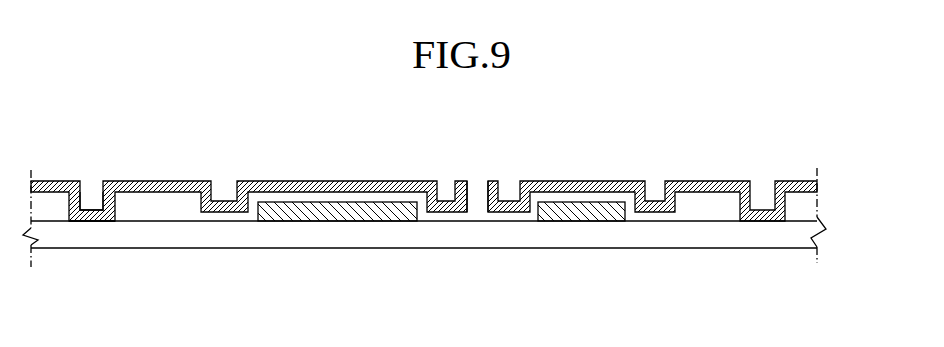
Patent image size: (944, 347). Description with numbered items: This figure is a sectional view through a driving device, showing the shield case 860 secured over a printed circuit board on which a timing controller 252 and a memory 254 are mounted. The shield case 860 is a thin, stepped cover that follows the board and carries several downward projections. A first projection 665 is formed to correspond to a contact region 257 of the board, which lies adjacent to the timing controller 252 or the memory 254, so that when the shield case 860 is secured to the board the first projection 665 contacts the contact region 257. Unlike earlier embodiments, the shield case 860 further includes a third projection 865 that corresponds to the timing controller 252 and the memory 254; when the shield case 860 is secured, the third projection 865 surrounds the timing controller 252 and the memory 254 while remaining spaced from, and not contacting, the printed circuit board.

The timing controller 252 is at (345, 221).
The memory 254 is at (587, 221).
The contact region 257 is at (90, 223).
The first projection 665 is at (91, 196).
The third projection 865 is at (489, 181).
The shield case 860 is at (817, 184).